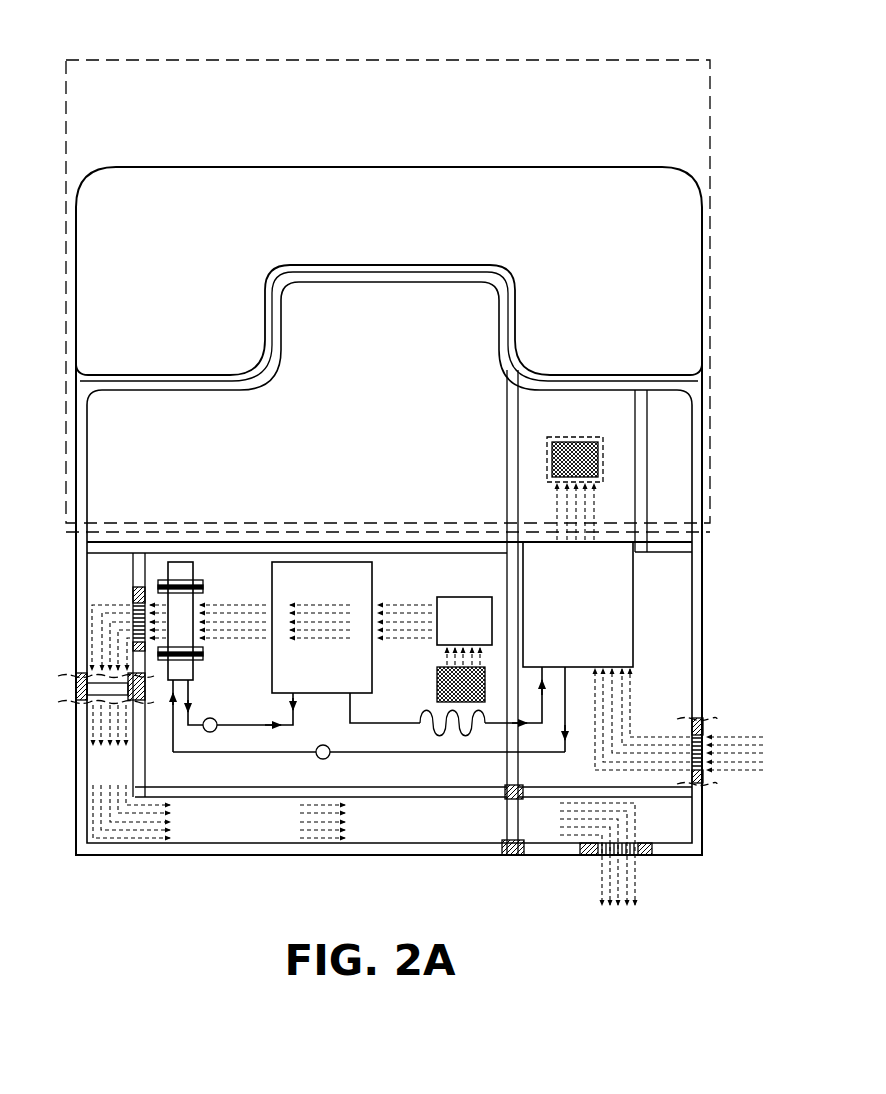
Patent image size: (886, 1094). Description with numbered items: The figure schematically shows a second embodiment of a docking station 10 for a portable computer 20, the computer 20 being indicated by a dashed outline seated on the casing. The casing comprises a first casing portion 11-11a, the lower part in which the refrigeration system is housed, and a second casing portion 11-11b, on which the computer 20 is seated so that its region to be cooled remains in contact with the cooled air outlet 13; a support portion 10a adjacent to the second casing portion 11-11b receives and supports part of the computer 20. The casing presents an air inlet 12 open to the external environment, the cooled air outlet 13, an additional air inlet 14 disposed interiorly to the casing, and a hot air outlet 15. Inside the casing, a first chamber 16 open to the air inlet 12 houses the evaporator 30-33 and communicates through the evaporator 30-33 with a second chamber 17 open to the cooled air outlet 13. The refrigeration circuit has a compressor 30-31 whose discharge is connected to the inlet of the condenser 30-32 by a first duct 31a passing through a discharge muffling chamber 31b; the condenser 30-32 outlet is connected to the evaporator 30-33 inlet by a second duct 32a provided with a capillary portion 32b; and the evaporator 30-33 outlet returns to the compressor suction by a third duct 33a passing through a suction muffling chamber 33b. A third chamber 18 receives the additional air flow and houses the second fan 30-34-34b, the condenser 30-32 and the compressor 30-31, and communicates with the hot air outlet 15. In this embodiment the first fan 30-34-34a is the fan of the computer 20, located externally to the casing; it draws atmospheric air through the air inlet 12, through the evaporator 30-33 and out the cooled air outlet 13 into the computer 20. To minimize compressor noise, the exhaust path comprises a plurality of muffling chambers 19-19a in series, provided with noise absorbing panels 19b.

The computer 20 is at (690, 50).
The docking station 10 is at (65, 558).
The support portion 10a is at (705, 277).
The second casing portion 11-11b is at (705, 438).
The first casing portion 11-11a is at (708, 610).
The second chamber 17 is at (622, 470).
The cooled air outlet 13 is at (577, 443).
The first fan 30-34-34a is at (567, 436).
The evaporator 30-33 is at (547, 560).
The muffling chambers 19-19a is at (103, 572).
The compressor 30-31 is at (197, 562).
The condenser 30-32 is at (320, 585).
The second fan 30-34-34b is at (448, 597).
The additional air inlet 14 is at (435, 688).
The first chamber 16 is at (645, 656).
The third chamber 18 is at (220, 704).
The discharge muffling chamber 31b is at (212, 737).
The first duct 31a is at (252, 732).
The suction muffling chamber 33b is at (324, 745).
The second duct 32a is at (368, 733).
The capillary portion 32b is at (452, 732).
The third duct 33a is at (541, 755).
The noise absorbing panels 19b is at (416, 782).
The air inlet 12 is at (720, 776).
The hot air outlet 15 is at (597, 860).